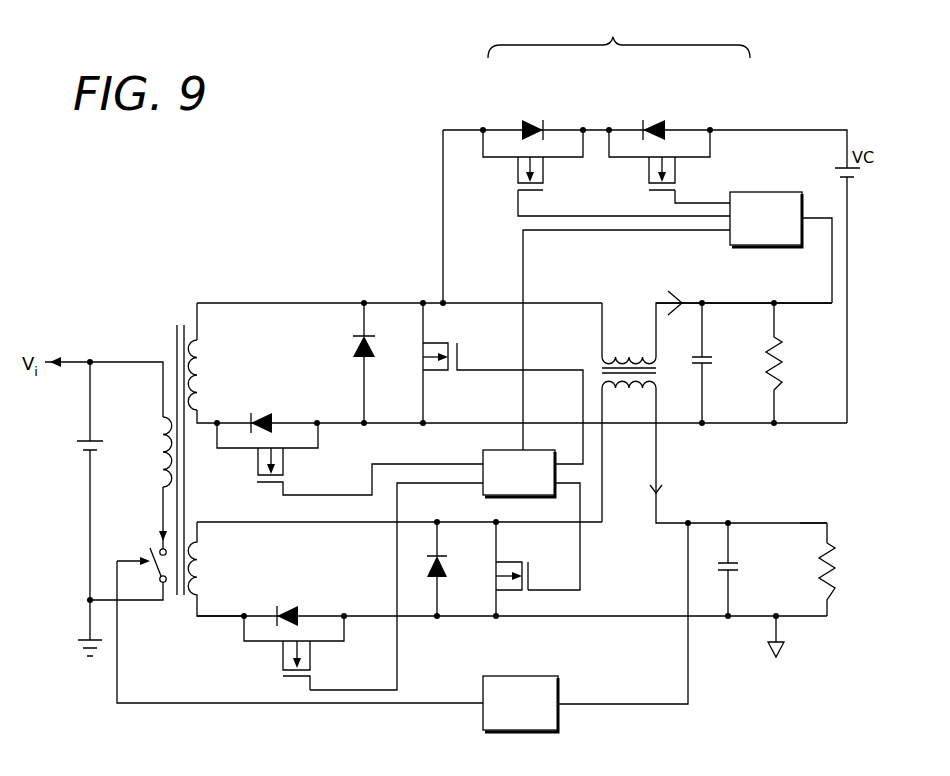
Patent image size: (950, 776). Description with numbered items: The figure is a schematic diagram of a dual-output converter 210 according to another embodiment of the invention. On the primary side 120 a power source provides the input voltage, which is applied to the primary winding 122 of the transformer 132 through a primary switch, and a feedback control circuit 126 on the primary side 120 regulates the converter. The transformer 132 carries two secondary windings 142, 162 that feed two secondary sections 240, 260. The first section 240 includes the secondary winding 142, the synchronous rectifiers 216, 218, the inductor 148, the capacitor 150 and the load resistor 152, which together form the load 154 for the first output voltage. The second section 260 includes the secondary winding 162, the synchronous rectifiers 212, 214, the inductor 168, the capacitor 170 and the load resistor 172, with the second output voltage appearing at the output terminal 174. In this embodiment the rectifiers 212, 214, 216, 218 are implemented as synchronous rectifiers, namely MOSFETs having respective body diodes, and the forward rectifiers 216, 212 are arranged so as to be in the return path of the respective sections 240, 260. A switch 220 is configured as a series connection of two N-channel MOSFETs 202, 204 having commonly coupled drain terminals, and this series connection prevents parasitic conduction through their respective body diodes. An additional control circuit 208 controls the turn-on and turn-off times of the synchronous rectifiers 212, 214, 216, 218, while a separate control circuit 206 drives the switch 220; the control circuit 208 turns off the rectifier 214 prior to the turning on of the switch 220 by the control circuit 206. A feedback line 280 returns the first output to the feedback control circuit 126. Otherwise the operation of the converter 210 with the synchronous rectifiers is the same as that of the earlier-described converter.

The primary side 120 is at (125, 362).
The primary winding 122 is at (155, 430).
The transformer 132 is at (182, 330).
The secondary winding 142 is at (217, 542).
The inductor 148 is at (615, 410).
The capacitor 150 is at (713, 567).
The load resistor 152 is at (820, 558).
The load 154 is at (829, 523).
The secondary winding 162 is at (212, 338).
The inductor 168 is at (630, 335).
The capacitor 170 is at (713, 358).
The load resistor 172 is at (785, 367).
The output terminal 174 is at (774, 303).
The N-channel MOSFET 202 is at (505, 128).
The N-channel MOSFET 204 is at (684, 128).
The control circuit 206 is at (764, 192).
The control circuit 208 is at (483, 452).
The converter 210 is at (335, 200).
The synchronous rectifier 212 is at (296, 433).
The synchronous rectifier 214 is at (400, 400).
The synchronous rectifier 216 is at (372, 642).
The synchronous rectifier 218 is at (466, 602).
The switch 220 is at (619, 33).
The section 240 is at (228, 603).
The section 260 is at (328, 318).
The feedback line 280 is at (650, 637).
The feedback control circuit 126 is at (558, 717).